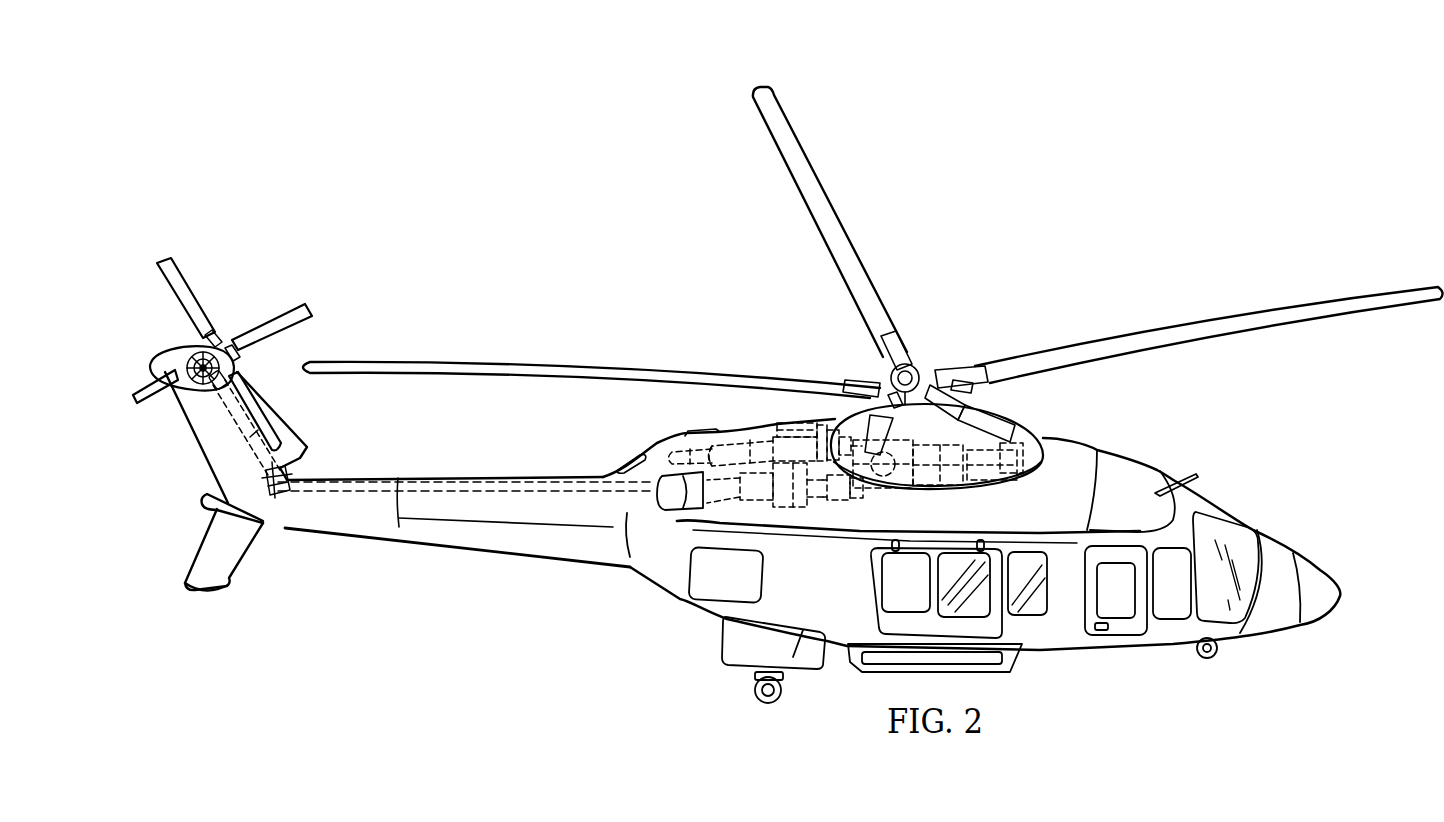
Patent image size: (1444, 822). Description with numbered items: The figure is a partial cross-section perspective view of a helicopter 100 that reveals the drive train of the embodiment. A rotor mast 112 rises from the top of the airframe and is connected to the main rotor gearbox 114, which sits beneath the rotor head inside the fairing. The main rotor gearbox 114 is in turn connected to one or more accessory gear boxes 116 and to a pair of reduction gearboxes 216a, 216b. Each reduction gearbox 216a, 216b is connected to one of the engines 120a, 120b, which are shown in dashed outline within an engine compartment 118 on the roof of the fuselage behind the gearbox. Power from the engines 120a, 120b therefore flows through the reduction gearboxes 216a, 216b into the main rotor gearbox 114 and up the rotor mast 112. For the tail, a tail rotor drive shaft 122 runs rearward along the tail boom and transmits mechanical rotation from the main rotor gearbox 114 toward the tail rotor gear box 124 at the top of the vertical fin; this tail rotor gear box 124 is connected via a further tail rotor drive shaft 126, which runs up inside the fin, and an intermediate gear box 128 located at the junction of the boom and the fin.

The helicopter 100 is at (1144, 124).
The rotor mast 112 is at (888, 505).
The main rotor gearbox 114 is at (925, 490).
The accessory gear box 116 is at (997, 482).
The engine compartment 118 is at (803, 410).
The engine 120a is at (774, 507).
The engine 120b is at (778, 423).
The tail rotor drive shaft 122 is at (486, 479).
The tail rotor gear box 124 is at (188, 350).
The tail rotor drive shaft 126 is at (263, 423).
The intermediate gear box 128 is at (277, 493).
The reduction gearbox 216a is at (823, 502).
The reduction gearbox 216b is at (826, 422).